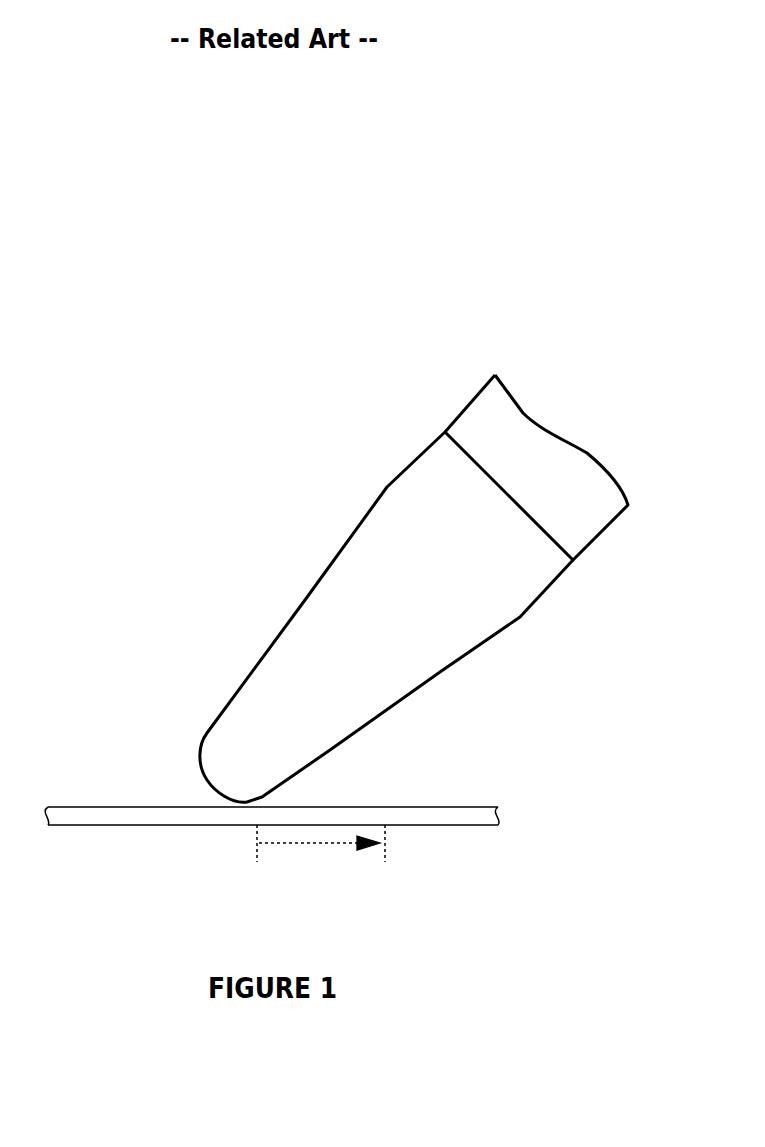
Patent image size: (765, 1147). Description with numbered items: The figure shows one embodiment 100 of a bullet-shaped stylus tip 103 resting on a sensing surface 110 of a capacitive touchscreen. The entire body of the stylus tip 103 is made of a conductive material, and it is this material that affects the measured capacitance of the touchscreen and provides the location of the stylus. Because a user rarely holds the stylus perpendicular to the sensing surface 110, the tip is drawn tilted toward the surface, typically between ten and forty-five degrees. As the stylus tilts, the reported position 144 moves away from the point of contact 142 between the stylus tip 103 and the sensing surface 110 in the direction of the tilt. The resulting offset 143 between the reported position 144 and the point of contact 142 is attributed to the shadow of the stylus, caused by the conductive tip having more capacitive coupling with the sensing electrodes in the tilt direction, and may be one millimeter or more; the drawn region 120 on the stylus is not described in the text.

The embodiment of a bullet-shaped stylus tip 100 is at (138, 443).
The bullet-shaped stylus tip 103 is at (386, 588).
The finger cuff / fingertip portion 120 is at (608, 500).
The sensing surface 110 is at (497, 810).
The point of contact 142 is at (234, 860).
The offset 143 is at (319, 855).
The reported position 144 is at (409, 860).